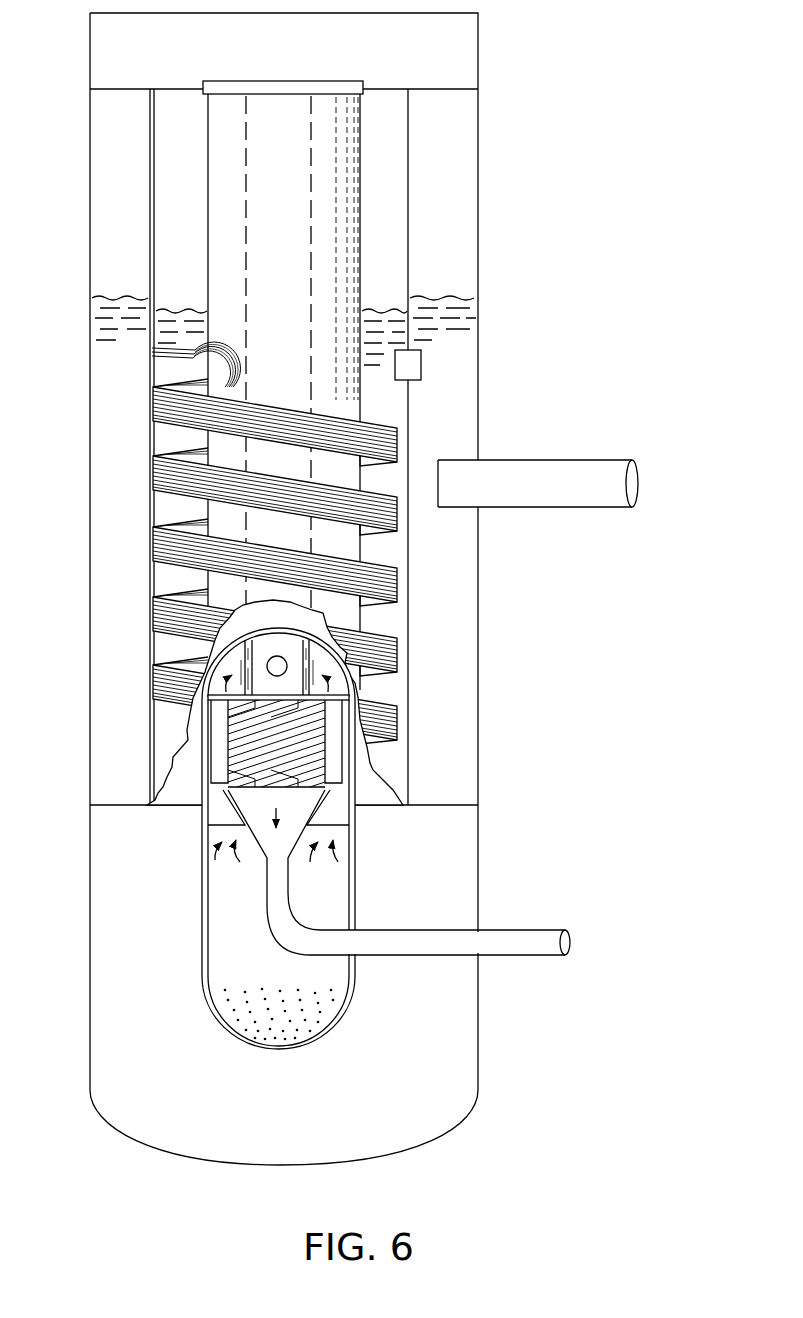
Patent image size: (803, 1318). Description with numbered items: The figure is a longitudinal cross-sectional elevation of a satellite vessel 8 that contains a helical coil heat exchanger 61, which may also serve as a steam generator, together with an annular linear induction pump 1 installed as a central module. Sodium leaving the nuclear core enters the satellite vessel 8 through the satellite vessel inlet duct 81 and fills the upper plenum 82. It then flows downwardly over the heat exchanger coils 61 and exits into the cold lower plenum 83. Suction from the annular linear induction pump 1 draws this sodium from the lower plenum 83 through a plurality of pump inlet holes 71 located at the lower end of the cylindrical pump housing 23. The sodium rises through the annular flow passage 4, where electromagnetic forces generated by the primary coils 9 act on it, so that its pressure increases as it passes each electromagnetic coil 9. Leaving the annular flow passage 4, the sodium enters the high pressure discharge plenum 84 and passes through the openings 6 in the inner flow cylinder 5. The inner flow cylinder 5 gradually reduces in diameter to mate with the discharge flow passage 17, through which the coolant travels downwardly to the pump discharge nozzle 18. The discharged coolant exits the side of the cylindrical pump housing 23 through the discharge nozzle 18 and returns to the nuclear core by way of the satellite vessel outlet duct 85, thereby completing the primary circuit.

The annular linear induction pump 1 is at (243, 1052).
The annular flow passage 4 is at (227, 791).
The inner flow cylinder 5 is at (307, 650).
The openings 6 is at (281, 656).
The satellite vessel 8 is at (478, 1010).
The electromagnetic coils 9 is at (226, 822).
The discharge flow passage 17 is at (274, 856).
The discharge nozzle 18 is at (418, 924).
The cylindrical pump housing 23 is at (278, 1050).
The helical coil heat exchanger 61 is at (151, 410).
The holes 71 is at (229, 1018).
The satellite vessel inlet duct 81 is at (602, 483).
The upper plenum 82 is at (131, 583).
The cold lower plenum 83 is at (425, 1080).
The high pressure discharge plenum 84 is at (233, 663).
The satellite vessel outlet duct 85 is at (545, 942).